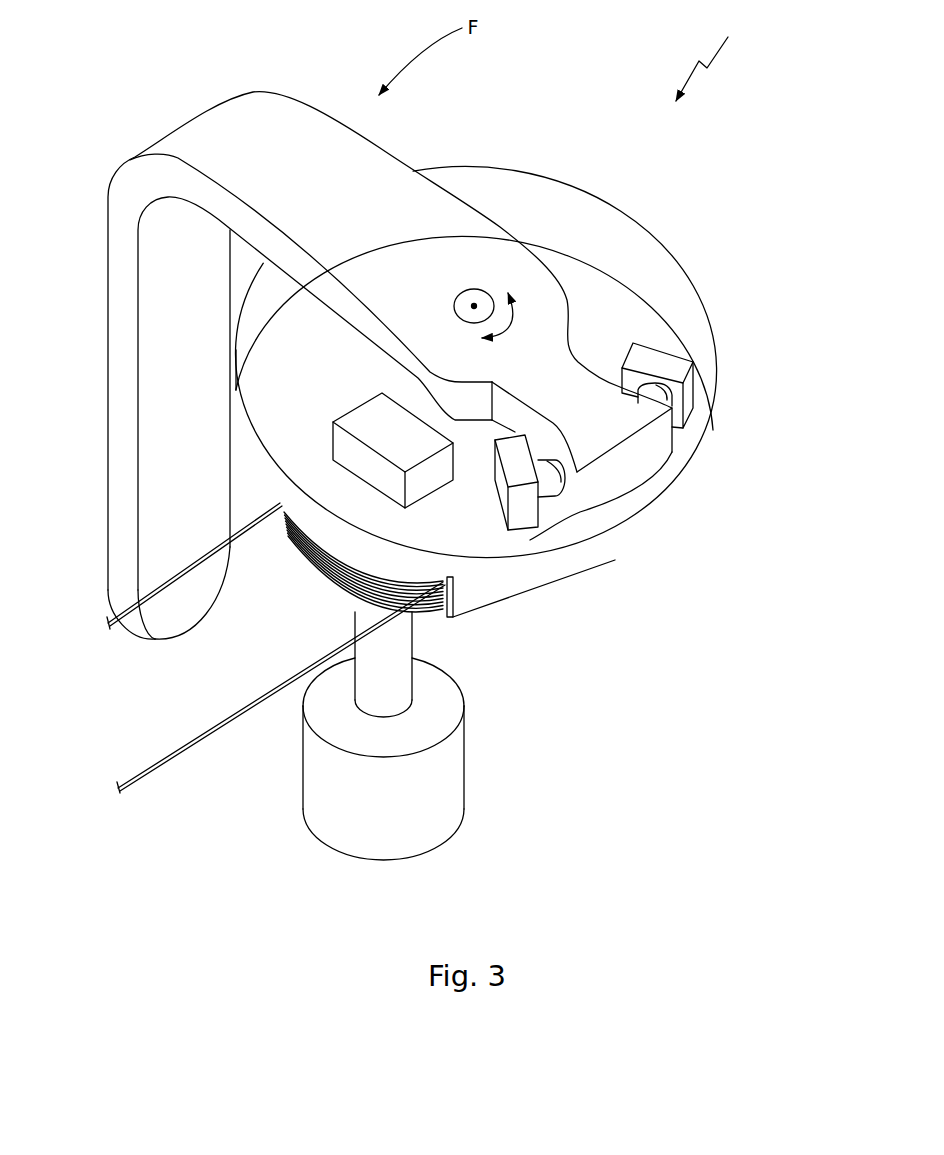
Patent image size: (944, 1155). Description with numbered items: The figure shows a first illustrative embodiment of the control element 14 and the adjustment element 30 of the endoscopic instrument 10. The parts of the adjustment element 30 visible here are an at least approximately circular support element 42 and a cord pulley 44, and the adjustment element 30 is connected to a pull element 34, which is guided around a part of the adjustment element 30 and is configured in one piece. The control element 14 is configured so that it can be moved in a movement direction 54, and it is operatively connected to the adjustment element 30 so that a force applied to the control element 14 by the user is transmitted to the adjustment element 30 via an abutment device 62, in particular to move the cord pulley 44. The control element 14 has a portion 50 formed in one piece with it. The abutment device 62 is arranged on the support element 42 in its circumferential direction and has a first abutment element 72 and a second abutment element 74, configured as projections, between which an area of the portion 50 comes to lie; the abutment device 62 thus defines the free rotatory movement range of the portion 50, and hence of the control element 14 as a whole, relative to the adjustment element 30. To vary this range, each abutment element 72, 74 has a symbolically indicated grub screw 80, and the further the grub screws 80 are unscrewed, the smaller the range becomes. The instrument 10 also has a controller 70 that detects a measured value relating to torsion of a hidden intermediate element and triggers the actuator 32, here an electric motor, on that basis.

The endoscopic instrument 10 is at (710, 56).
The control element 14 is at (370, 160).
The support element 42 is at (700, 300).
The movement direction 54 is at (510, 328).
The controller 70 is at (382, 467).
The first abutment element 72 is at (520, 517).
The grub screw 80 is at (547, 477).
The second abutment element 74 is at (685, 402).
The portion 50 is at (618, 427).
The abutment device 62 is at (541, 601).
The cord pulley 44 is at (347, 558).
The pull element 34 is at (156, 592).
The adjustment element 30 is at (632, 622).
The actuator 32 is at (447, 793).